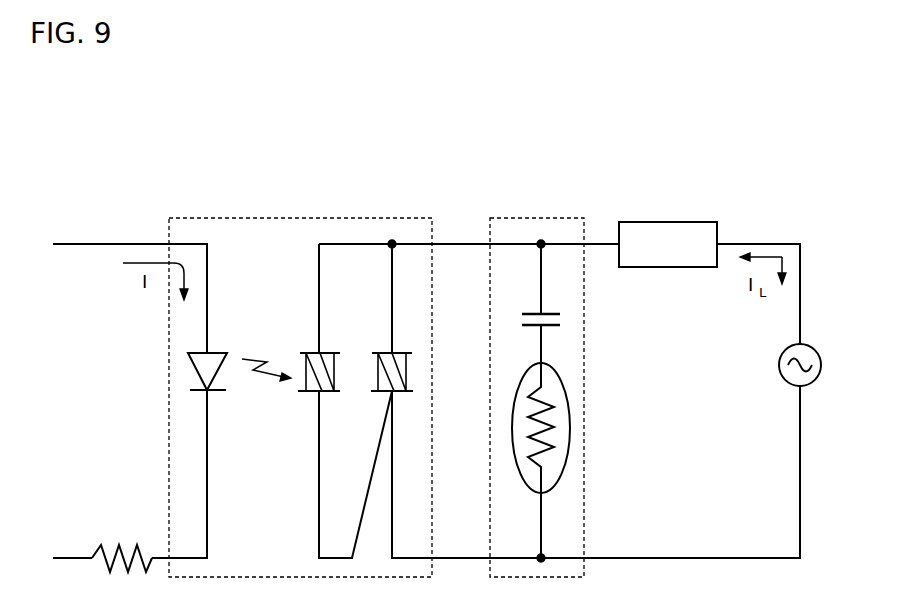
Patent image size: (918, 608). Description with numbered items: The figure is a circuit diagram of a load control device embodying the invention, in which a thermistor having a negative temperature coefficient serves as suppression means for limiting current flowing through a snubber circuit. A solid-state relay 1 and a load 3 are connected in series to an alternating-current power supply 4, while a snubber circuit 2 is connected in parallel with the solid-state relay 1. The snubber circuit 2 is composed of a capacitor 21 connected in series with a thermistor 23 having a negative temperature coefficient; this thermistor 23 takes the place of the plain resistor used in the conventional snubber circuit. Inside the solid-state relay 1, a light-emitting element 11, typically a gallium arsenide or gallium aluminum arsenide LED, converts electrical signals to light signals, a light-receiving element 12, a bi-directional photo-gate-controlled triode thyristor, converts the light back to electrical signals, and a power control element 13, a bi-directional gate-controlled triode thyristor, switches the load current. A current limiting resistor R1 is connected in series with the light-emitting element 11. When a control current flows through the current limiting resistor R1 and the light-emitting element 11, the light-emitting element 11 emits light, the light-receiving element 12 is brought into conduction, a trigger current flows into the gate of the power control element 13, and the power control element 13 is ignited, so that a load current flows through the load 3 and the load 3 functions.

The solid-state relay 1 is at (303, 218).
The snubber circuit 2 is at (575, 217).
The load 3 is at (695, 222).
The alternating-current power supply 4 is at (779, 364).
The light-emitting element 11 is at (192, 366).
The light-receiving element 12 is at (307, 352).
The power control element 13 is at (383, 352).
The capacitor 21 is at (560, 319).
The thermistor 23 is at (570, 428).
The current limiting resistor R1 is at (110, 545).